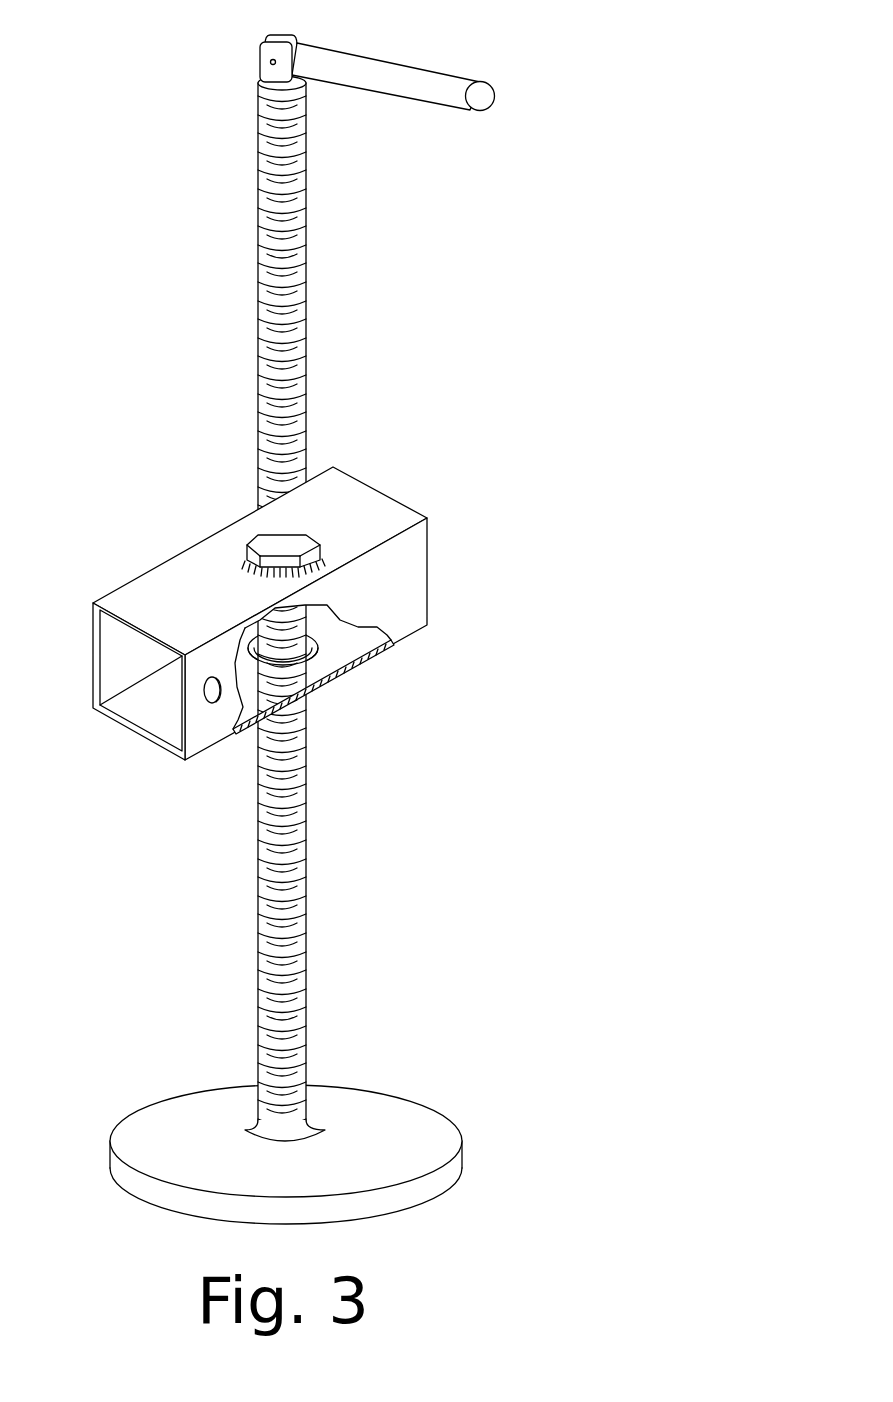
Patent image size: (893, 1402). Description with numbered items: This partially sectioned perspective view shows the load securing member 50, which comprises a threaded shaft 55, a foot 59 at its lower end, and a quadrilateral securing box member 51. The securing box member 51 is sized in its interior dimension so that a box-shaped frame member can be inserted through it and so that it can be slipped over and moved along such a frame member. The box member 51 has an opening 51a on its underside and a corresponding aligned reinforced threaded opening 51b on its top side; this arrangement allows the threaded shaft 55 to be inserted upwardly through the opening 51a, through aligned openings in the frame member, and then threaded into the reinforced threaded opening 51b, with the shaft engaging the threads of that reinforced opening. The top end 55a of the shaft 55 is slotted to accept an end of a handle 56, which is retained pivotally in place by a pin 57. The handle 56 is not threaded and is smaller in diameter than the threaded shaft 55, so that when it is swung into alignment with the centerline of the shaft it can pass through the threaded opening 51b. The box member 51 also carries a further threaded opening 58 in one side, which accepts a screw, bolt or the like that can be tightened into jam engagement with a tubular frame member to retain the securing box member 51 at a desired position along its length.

The load securing member 50 is at (532, 285).
The securing box member 51 is at (317, 613).
The opening 51a is at (346, 670).
The reinforced threaded opening 51b is at (217, 532).
The threaded shaft 55 is at (332, 612).
The top end 55a is at (343, 118).
The handle 56 is at (388, 56).
The pin 57 is at (202, 68).
The further threaded opening 58 is at (123, 721).
The foot 59 is at (342, 1150).